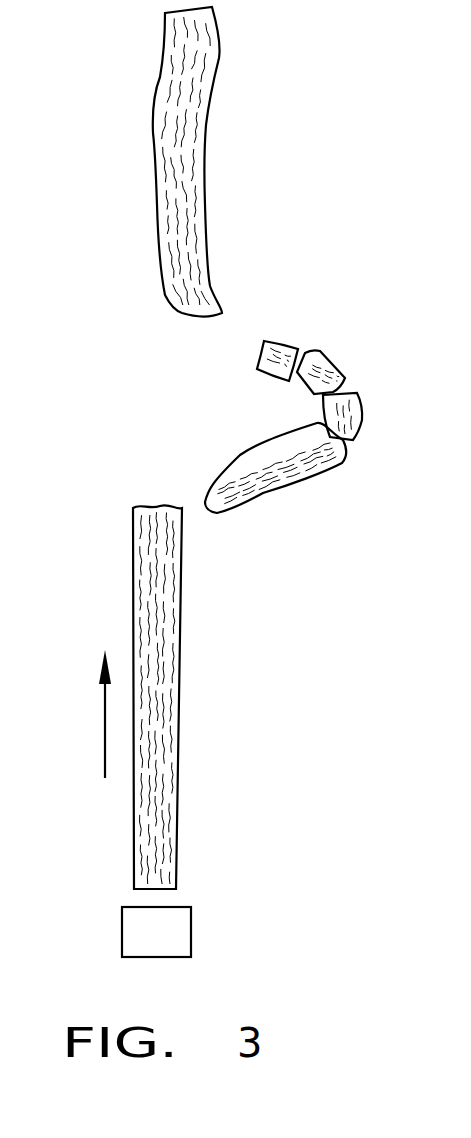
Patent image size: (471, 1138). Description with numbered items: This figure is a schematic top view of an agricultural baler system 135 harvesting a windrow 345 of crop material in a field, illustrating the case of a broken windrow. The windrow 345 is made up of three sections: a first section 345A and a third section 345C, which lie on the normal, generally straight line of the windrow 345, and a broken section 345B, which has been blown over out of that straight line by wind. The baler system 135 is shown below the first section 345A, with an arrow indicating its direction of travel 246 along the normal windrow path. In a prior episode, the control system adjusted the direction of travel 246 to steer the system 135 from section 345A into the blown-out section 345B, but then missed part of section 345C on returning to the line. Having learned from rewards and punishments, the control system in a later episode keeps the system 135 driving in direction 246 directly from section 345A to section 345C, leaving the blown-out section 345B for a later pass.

The windrow section 345C is at (200, 188).
The broken section 345B is at (273, 482).
The windrow section 345A is at (182, 608).
The windrow 345 is at (215, 752).
The direction of travel 246 is at (103, 725).
The agricultural baler system 135 is at (192, 940).